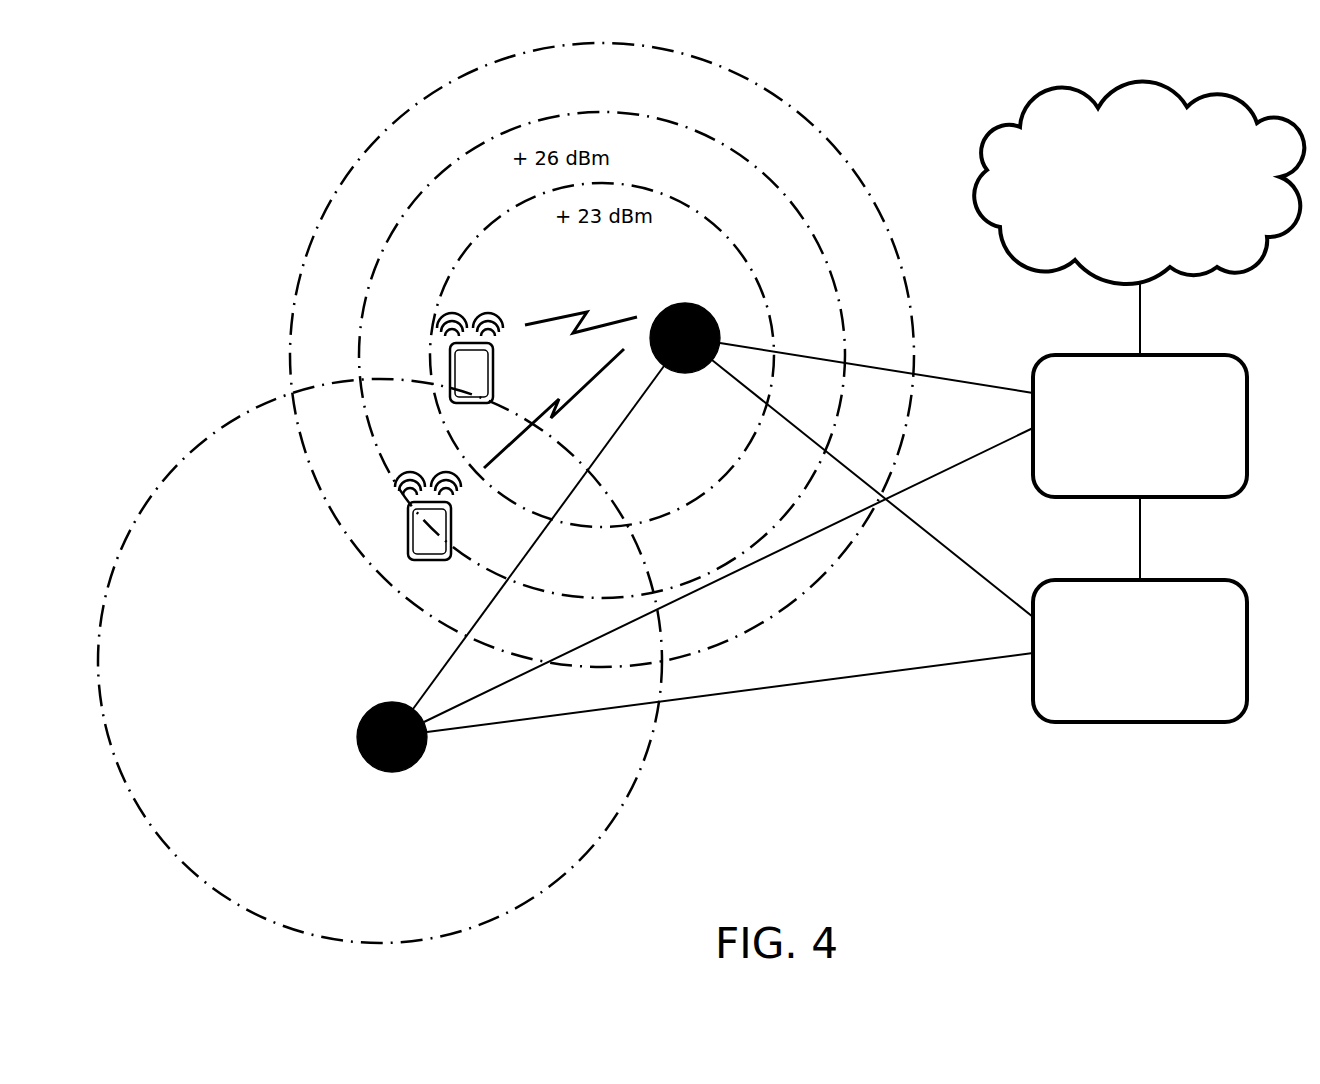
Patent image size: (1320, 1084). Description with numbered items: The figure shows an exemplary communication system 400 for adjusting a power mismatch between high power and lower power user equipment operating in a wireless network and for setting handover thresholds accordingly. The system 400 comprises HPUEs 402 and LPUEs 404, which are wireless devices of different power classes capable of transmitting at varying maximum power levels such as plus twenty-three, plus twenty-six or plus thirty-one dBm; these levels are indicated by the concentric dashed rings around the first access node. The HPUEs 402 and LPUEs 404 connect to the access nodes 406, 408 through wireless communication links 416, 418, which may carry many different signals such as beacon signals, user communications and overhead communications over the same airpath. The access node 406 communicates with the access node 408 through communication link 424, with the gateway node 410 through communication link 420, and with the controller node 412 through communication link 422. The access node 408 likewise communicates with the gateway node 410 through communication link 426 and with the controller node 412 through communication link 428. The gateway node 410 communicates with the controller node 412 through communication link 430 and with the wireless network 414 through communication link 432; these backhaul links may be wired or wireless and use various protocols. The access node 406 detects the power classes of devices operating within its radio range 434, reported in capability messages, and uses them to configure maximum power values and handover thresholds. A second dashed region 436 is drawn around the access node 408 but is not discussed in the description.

The communication system 400 is at (105, 880).
The HPUE 402 is at (449, 543).
The LPUE 404 is at (493, 385).
The access node 406 is at (683, 303).
The access node 408 is at (365, 760).
The gateway node 410 is at (1140, 426).
The controller node 412 is at (1140, 651).
The wireless network 414 is at (1139, 182).
The communication link 416 is at (568, 313).
The communication link 418 is at (533, 424).
The communication link 420 is at (802, 357).
The communication link 422 is at (800, 428).
The communication link 424 is at (641, 403).
The communication link 426 is at (661, 610).
The communication link 428 is at (808, 678).
The communication link 430 is at (1163, 540).
The communication link 432 is at (1142, 337).
The radio range 434 is at (862, 185).
The coverage area 436 is at (560, 882).